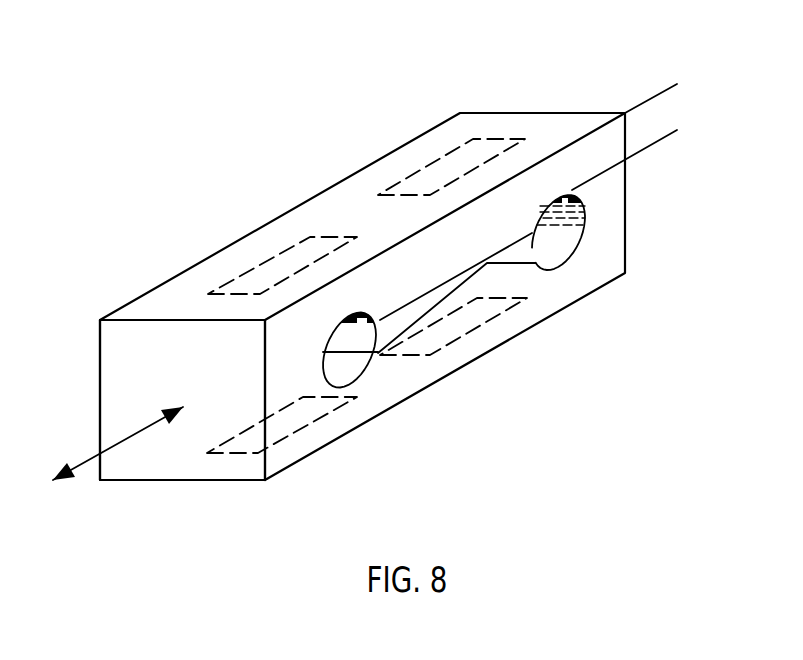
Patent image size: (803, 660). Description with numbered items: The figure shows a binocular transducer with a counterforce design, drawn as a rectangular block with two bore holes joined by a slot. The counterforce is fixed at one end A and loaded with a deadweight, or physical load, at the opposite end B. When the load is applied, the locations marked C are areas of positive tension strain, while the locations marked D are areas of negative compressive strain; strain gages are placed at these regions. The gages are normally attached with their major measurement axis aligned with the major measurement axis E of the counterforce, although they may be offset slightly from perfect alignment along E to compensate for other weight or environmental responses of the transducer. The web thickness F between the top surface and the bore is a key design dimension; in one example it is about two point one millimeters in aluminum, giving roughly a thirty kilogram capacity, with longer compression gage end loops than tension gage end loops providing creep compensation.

The fixed end A is at (632, 217).
The loaded end B is at (130, 345).
The tension strain areas C is at (465, 158).
The compressive strain areas D is at (280, 263).
The major measurement axis E is at (105, 455).
The web thickness F is at (657, 188).